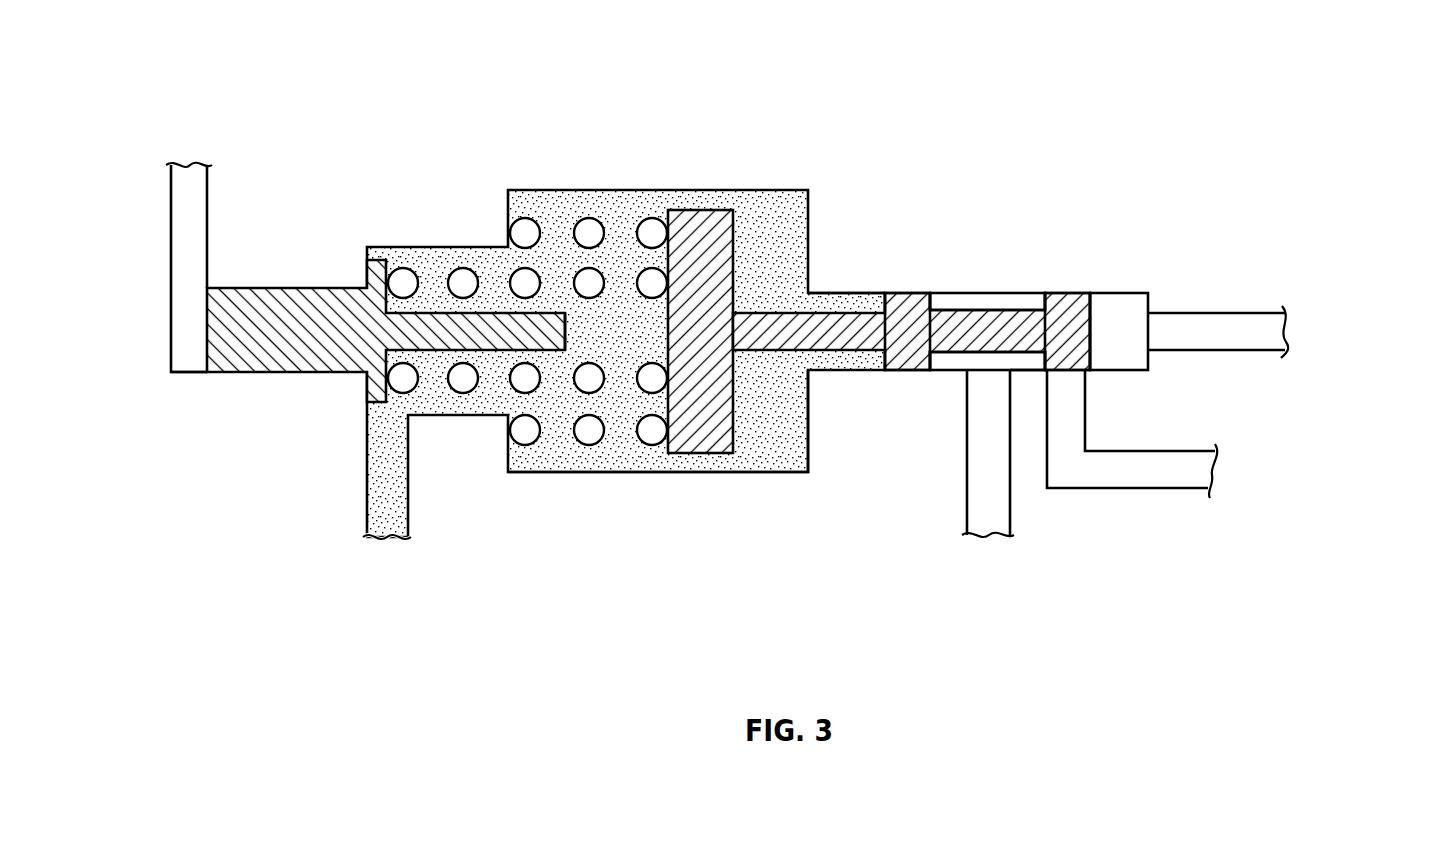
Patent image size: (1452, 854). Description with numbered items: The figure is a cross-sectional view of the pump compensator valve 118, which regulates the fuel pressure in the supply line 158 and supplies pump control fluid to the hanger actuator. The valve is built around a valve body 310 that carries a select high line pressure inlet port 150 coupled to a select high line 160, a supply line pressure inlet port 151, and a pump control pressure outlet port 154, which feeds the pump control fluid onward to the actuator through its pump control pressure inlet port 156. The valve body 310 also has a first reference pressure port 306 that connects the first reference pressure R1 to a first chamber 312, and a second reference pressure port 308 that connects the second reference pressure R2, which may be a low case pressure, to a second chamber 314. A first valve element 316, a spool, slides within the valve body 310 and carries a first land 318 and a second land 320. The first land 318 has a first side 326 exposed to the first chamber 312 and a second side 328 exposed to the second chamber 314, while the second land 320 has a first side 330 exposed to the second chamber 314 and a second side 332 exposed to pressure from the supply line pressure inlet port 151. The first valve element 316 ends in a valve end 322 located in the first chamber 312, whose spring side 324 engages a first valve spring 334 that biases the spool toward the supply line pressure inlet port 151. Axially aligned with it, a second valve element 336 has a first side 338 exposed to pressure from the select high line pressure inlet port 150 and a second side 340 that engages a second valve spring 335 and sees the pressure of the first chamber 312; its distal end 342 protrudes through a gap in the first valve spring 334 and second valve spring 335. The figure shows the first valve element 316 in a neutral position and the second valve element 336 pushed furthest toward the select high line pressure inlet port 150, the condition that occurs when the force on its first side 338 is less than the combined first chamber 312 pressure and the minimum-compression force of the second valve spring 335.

The pump compensator valve 118 is at (632, 192).
The select high line pressure inlet port 150 is at (171, 318).
The supply line pressure inlet port 151 is at (1205, 313).
The pump control pressure outlet port 154 is at (1085, 400).
The pump control pressure inlet port 156 is at (1237, 470).
The supply line 158 is at (1308, 331).
The select high line 160 is at (188, 145).
The first reference pressure port 306 is at (367, 455).
The second reference pressure port 308 is at (967, 455).
The valve body 310 is at (555, 472).
The first chamber 312 is at (770, 460).
The second chamber 314 is at (1020, 372).
The first valve element 316 is at (760, 313).
The first land 318 is at (908, 372).
The second land 320 is at (1060, 293).
The valve end 322 is at (705, 210).
The spring side 324 is at (660, 440).
The first side 326 is at (880, 300).
The second side 328 is at (932, 302).
The first side 330 is at (1042, 302).
The second side 332 is at (1090, 332).
The first valve spring 334 is at (589, 218).
The second valve spring 335 is at (463, 268).
The second valve element 336 is at (270, 372).
The first side 338 is at (207, 350).
The second side 340 is at (390, 281).
The distal end 342 is at (568, 332).
The first reference pressure R1 is at (387, 558).
The second reference pressure R2 is at (988, 558).